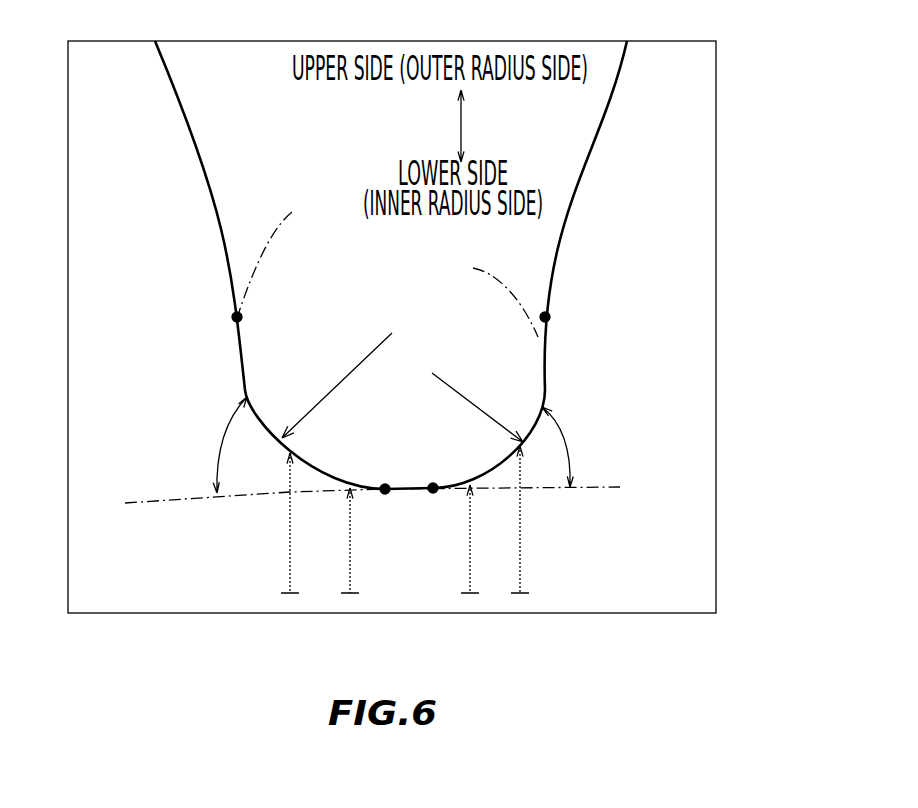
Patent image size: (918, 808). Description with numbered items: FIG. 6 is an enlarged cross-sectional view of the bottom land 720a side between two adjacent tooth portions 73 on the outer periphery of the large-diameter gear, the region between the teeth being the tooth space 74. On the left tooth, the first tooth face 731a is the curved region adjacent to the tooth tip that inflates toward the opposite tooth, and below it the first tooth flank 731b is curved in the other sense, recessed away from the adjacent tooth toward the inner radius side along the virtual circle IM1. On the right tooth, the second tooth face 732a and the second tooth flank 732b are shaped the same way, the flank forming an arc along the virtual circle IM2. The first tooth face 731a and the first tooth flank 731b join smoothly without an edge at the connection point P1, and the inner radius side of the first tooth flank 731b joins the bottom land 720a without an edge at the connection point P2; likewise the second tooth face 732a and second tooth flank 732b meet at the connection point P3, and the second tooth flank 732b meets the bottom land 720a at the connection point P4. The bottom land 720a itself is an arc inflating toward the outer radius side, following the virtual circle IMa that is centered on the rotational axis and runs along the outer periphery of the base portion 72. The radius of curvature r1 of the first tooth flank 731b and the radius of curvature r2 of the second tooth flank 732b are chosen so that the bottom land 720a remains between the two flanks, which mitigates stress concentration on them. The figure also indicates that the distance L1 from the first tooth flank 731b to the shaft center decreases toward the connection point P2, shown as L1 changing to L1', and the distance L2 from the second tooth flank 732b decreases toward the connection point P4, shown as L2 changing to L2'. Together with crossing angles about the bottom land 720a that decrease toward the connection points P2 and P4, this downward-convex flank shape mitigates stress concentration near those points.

The base portion 72 is at (406, 600).
The tooth portion 73 is at (396, 265).
The tooth space 74 is at (274, 133).
The first tooth face 731a is at (232, 227).
The first tooth flank 731b is at (242, 372).
The second tooth face 732a is at (550, 227).
The second tooth flank 732b is at (552, 384).
The bottom land 720a is at (404, 487).
The connection point P1 is at (234, 317).
The connection point P2 is at (384, 485).
The connection point P3 is at (549, 317).
The connection point P4 is at (435, 485).
The virtual circle IM1 is at (288, 246).
The virtual circle IM2 is at (482, 292).
The virtual circle IMa is at (348, 501).
The radius of curvature r1 is at (337, 385).
The radius of curvature r2 is at (477, 401).
The distance L1 is at (277, 523).
The distance L1' is at (330, 540).
The distance L2' is at (487, 539).
The distance L2 is at (537, 519).